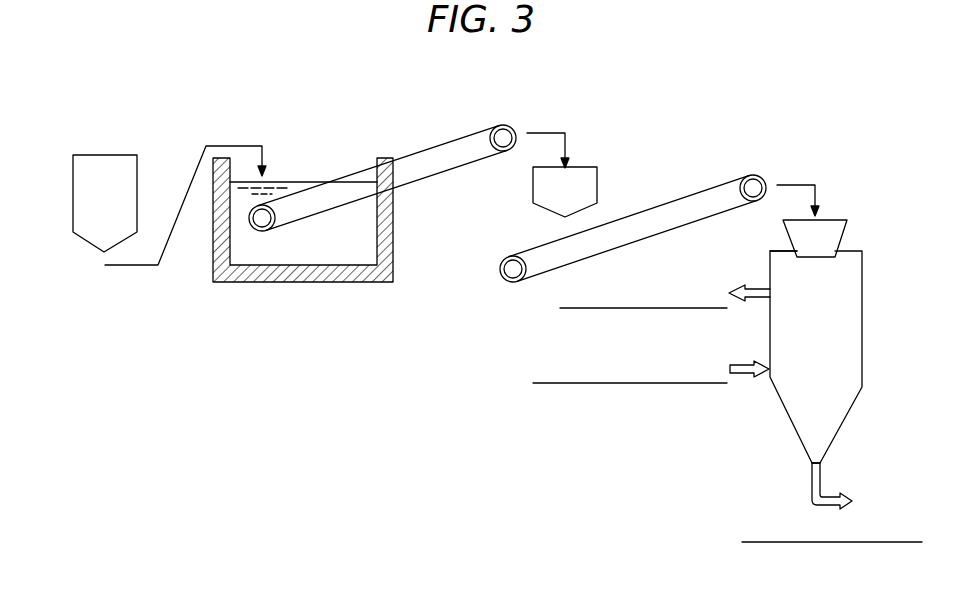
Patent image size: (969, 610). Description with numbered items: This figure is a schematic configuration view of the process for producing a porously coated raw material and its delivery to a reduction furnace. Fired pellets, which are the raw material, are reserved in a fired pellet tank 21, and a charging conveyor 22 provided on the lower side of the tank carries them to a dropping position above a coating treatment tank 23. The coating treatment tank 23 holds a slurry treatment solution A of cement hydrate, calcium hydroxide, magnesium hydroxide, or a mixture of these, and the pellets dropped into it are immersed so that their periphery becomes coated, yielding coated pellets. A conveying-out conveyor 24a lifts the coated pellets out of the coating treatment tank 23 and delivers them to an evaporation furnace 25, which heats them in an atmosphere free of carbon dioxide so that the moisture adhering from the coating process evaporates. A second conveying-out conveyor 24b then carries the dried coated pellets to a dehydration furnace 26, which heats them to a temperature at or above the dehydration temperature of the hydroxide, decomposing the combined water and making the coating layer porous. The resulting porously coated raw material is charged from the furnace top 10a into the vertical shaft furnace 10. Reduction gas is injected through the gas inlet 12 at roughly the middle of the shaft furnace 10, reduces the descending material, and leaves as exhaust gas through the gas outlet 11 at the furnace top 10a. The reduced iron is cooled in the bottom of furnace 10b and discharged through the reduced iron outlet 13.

The shaft furnace 10 is at (828, 328).
The furnace top 10a is at (769, 270).
The bottom of furnace 10b is at (826, 460).
The gas outlet 11 is at (768, 298).
The gas inlet 12 is at (768, 376).
The reduced iron outlet 13 is at (809, 467).
The fired pellet tank 21 is at (88, 200).
The charging conveyor 22 is at (182, 200).
The coating treatment tank 23 is at (243, 282).
The conveying-out conveyor 24a is at (437, 146).
The conveying-out conveyor 24b is at (675, 200).
The evaporation furnace 25 is at (582, 178).
The dehydration furnace 26 is at (836, 222).